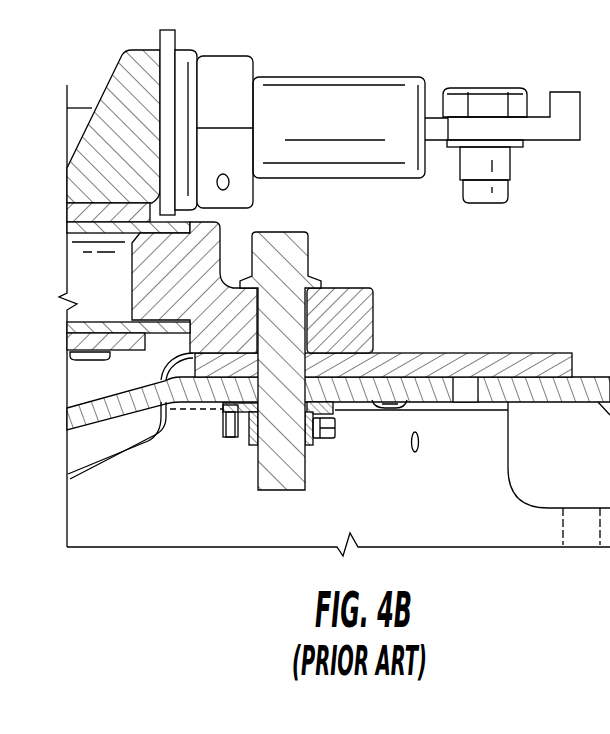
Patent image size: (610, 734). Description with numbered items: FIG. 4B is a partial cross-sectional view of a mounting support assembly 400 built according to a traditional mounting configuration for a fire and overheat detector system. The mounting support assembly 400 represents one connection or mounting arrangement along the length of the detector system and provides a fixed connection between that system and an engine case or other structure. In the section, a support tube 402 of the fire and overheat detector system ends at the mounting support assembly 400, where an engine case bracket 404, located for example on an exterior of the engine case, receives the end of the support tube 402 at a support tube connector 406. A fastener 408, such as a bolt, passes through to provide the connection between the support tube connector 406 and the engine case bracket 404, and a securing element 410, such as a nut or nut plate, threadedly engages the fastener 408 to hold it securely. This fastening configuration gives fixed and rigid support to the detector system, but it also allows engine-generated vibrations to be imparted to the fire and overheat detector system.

The mounting support assembly 400 is at (315, 293).
The support tube 402 is at (87, 280).
The engine case bracket 404 is at (568, 377).
The support tube connector 406 is at (347, 297).
The fastener 408 is at (282, 467).
The securing element 410 is at (333, 407).